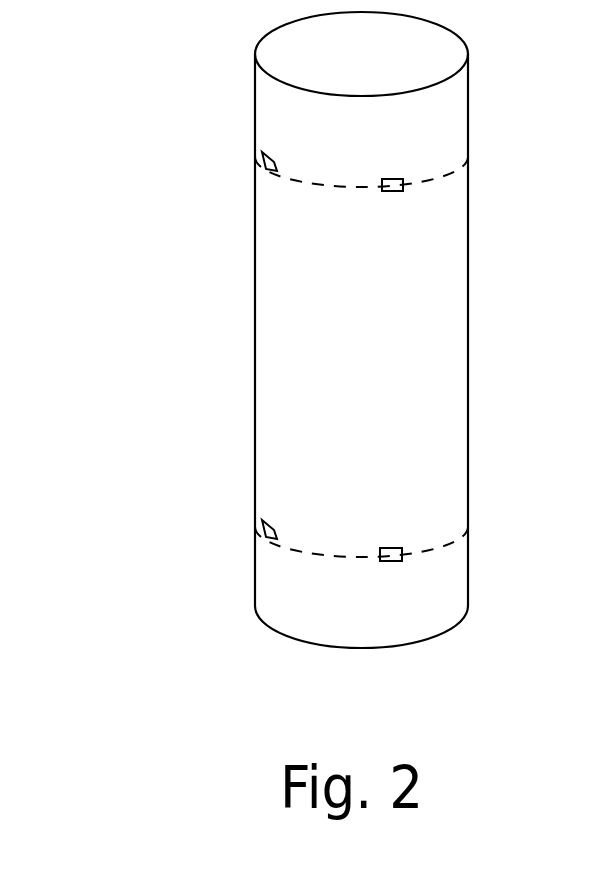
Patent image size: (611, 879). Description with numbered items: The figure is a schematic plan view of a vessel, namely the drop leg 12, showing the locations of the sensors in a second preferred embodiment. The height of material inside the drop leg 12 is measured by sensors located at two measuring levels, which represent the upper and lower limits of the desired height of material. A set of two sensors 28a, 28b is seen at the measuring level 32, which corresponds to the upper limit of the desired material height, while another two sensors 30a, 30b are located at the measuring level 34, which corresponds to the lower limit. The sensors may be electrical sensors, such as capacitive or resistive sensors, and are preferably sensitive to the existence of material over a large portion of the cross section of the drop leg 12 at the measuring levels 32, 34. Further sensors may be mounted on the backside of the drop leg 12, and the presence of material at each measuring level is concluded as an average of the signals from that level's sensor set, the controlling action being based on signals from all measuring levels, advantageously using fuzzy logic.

The drop leg 12 is at (255, 320).
The sensor 28a is at (265, 170).
The sensor 28b is at (403, 179).
The sensor 30a is at (267, 535).
The sensor 30b is at (402, 548).
The measuring level 32 is at (447, 168).
The measuring level 34 is at (445, 537).